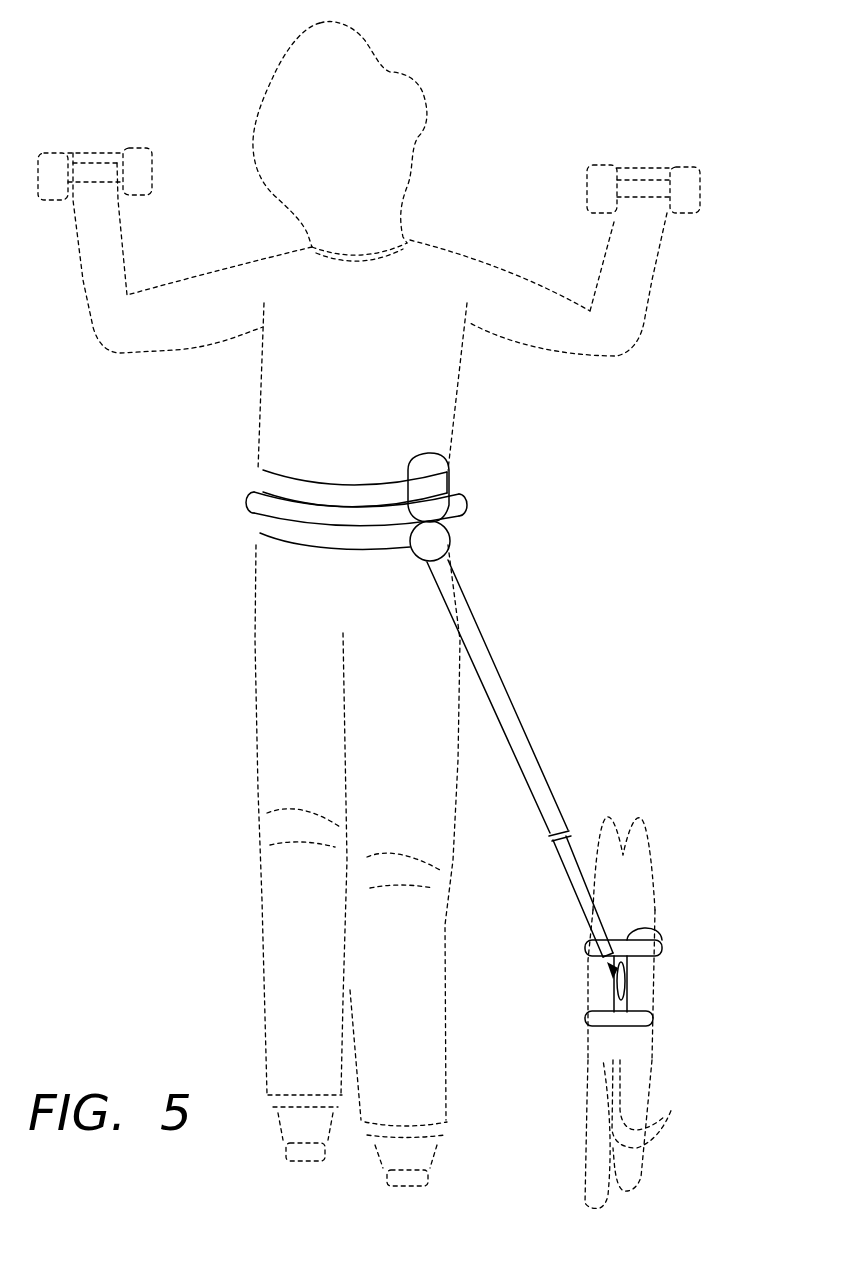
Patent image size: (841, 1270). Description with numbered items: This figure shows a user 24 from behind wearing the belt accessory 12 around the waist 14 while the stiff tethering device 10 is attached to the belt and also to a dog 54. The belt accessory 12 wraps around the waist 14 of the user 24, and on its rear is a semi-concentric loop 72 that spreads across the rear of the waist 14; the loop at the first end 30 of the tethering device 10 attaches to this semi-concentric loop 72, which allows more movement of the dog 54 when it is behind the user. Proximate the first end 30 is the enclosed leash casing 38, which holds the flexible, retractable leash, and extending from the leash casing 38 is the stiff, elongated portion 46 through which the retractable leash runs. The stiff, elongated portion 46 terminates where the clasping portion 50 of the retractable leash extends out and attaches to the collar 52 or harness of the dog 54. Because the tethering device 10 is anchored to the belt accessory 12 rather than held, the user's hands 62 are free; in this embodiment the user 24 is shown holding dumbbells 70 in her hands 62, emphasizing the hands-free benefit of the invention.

The tethering device 10 is at (532, 717).
The belt accessory 12 is at (337, 470).
The waist 14 is at (252, 468).
The user 24 is at (258, 399).
The first end 30 is at (410, 472).
The leash casing 38 is at (452, 545).
The stiff, elongated portion 46 is at (512, 710).
The clasping portion 50 is at (623, 978).
The collar 52 is at (655, 931).
The dog 54 is at (670, 855).
The hands 62 is at (83, 160).
The dumbbells 70 is at (148, 163).
The semi-concentric loop 72 is at (358, 517).